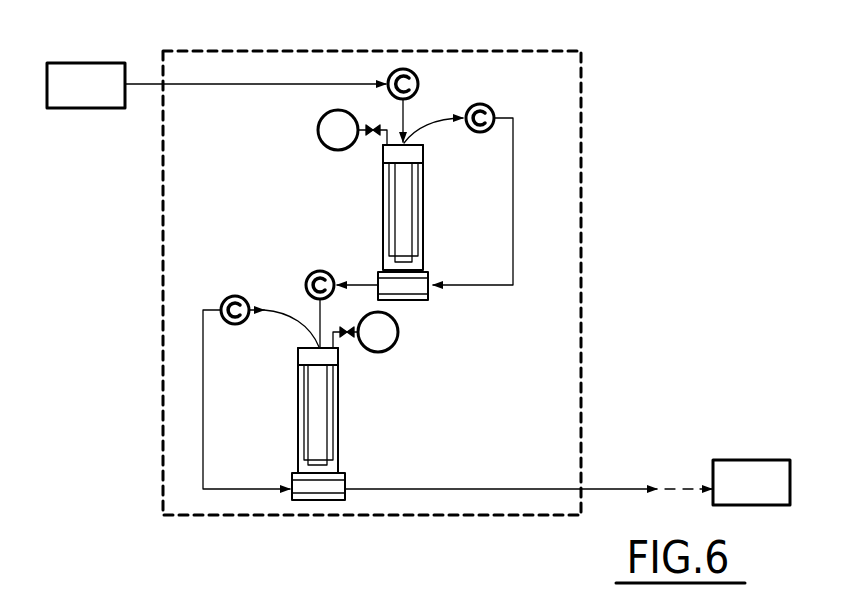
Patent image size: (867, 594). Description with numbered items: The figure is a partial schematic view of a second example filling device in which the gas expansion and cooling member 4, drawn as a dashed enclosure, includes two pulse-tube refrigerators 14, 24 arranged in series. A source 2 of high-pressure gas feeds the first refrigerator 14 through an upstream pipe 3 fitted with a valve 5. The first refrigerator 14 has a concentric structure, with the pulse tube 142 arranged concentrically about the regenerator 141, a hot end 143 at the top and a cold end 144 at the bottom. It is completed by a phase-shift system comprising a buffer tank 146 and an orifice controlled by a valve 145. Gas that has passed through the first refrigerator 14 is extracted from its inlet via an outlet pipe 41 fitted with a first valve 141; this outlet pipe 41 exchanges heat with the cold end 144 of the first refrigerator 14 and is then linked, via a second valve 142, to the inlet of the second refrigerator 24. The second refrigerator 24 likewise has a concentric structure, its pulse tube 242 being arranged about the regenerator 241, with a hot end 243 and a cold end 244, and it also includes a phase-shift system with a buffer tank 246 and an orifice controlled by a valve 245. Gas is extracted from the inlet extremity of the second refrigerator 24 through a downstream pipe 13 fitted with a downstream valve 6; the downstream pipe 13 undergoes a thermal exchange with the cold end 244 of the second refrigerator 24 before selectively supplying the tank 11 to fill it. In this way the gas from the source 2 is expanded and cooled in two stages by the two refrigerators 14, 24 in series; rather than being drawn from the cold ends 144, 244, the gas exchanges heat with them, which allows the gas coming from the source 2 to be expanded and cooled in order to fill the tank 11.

The source 2 is at (98, 99).
The upstream pipe 3 is at (140, 81).
The gas expansion and cooling member 4 is at (586, 113).
The valve 5 is at (404, 68).
The downstream valve 6 is at (235, 295).
The tank 11 is at (740, 475).
The downstream pipe 13 is at (612, 484).
The first refrigerator 14 is at (392, 179).
The second refrigerator 24 is at (274, 450).
The outlet pipe 41 is at (440, 116).
The regenerator 141 is at (497, 100).
The pulse tube 142 is at (428, 245).
The hot end 143 is at (433, 155).
The cold end 144 is at (428, 266).
The valve 145 is at (371, 143).
The buffer tank 146 is at (334, 130).
The regenerator 241 is at (315, 418).
The pulse tube 242 is at (298, 449).
The hot end 243 is at (296, 355).
The cold end 244 is at (347, 462).
The valve 245 is at (349, 347).
The buffer tank 246 is at (392, 330).